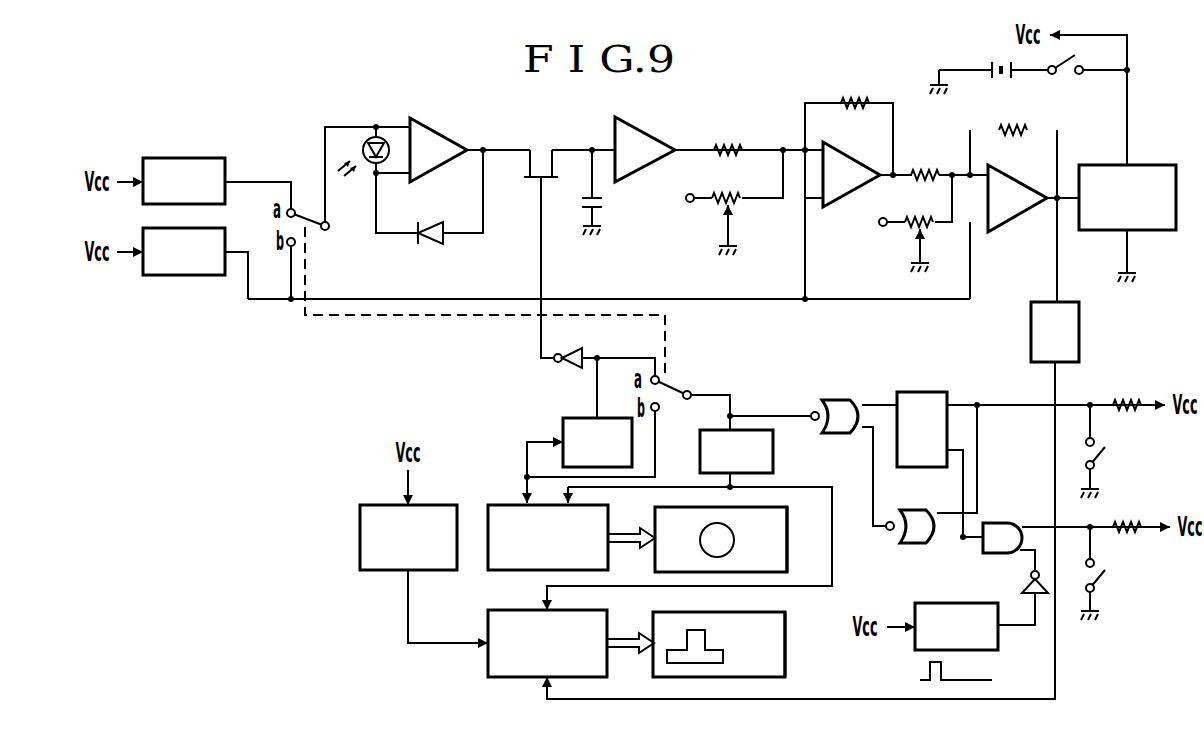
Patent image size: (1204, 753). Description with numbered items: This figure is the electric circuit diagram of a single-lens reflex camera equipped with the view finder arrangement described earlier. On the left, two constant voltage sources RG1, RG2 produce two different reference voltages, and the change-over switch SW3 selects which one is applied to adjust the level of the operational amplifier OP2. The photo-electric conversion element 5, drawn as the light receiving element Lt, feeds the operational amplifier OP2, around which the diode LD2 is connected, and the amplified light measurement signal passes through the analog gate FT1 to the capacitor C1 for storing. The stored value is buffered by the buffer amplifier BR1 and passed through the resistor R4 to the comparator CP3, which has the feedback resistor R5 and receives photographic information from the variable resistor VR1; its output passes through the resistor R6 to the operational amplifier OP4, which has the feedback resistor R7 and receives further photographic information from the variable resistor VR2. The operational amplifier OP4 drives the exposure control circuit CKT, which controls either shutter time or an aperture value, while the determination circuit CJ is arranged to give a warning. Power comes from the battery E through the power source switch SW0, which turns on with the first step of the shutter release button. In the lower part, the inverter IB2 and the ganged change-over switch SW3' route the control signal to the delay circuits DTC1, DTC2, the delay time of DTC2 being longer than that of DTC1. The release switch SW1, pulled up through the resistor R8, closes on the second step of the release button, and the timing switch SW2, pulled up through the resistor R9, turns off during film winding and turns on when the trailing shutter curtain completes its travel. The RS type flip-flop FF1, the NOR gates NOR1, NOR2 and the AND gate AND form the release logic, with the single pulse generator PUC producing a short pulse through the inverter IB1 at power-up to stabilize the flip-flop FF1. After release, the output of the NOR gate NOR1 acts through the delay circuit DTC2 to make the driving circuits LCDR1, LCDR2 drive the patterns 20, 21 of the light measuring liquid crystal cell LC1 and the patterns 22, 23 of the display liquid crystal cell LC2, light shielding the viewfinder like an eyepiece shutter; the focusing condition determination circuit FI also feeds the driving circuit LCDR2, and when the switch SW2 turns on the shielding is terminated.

The photo-electric conversion element 5 is at (379, 128).
The pattern 20 is at (703, 546).
The pattern 21 is at (789, 531).
The pattern 22 is at (788, 639).
The pattern 23 is at (683, 650).
The constant voltage source RG1 is at (184, 181).
The constant voltage source RG2 is at (184, 251).
The change-over switch SW3 is at (314, 236).
The light receiving element symbol Lt is at (365, 145).
The operational amplifier OP2 is at (438, 150).
The diode LD2 is at (429, 249).
The analog gate FT1 is at (541, 148).
The capacitor C1 is at (580, 200).
The buffer amplifier BR1 is at (645, 149).
The resistor R4 is at (728, 135).
The variable resistor VR1 is at (713, 183).
The resistor R5 is at (855, 87).
The comparator CP3 is at (851, 174).
The resistor R6 is at (925, 159).
The variable resistor VR2 is at (906, 207).
The resistor R7 is at (1013, 115).
The operational amplifier OP4 is at (1017, 198).
The power source battery E is at (1001, 56).
The power source switch SW0 is at (1066, 81).
The exposure control circuit CKT is at (1127, 197).
The inverter IB2 is at (569, 343).
The change-over switch SW3' is at (686, 386).
The delay circuit DTC1 is at (597, 442).
The delay circuit DTC2 is at (736, 451).
The NOR gate NOR1 is at (837, 400).
The RS type flip-flop FF1 is at (922, 413).
The determination circuit CJ is at (1055, 332).
The resistor R8 is at (1127, 389).
The release switch SW1 is at (1116, 454).
The NOR gate NOR2 is at (912, 511).
The AND gate AND is at (1003, 521).
The resistor R9 is at (1127, 510).
The timing switch SW2 is at (1116, 578).
The inverter IB1 is at (1020, 582).
The single pulse generator PUC is at (956, 626).
The focusing condition determination circuit FI is at (408, 537).
The driving circuit LCDR1 is at (548, 537).
The driving circuit LCDR2 is at (547, 643).
The light measuring liquid crystal cell LC1 is at (721, 539).
The display liquid crystal cell LC2 is at (719, 644).